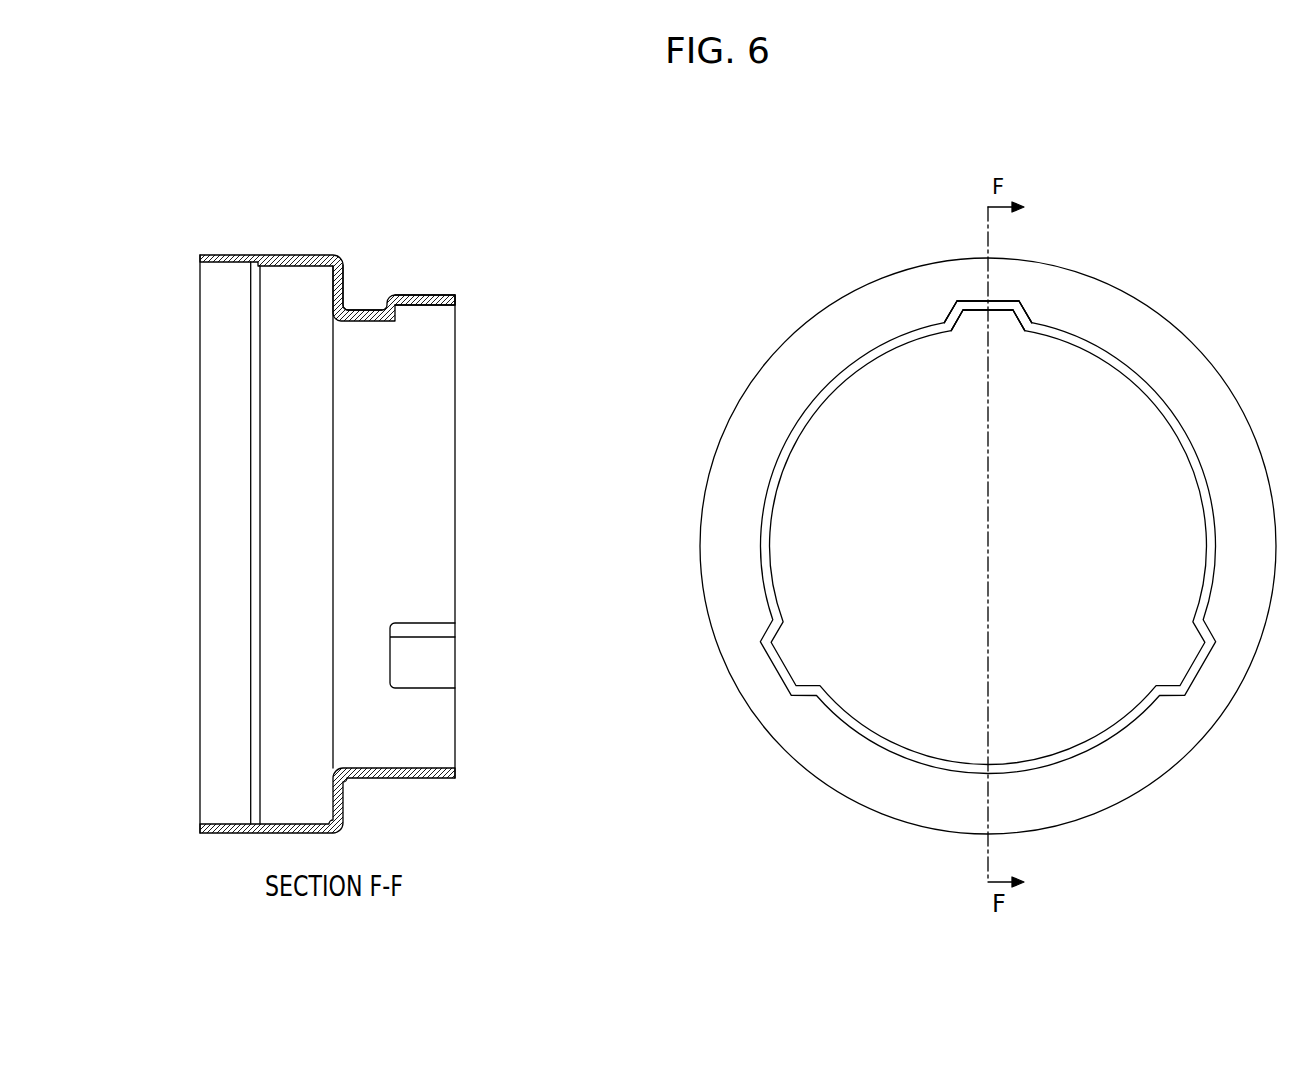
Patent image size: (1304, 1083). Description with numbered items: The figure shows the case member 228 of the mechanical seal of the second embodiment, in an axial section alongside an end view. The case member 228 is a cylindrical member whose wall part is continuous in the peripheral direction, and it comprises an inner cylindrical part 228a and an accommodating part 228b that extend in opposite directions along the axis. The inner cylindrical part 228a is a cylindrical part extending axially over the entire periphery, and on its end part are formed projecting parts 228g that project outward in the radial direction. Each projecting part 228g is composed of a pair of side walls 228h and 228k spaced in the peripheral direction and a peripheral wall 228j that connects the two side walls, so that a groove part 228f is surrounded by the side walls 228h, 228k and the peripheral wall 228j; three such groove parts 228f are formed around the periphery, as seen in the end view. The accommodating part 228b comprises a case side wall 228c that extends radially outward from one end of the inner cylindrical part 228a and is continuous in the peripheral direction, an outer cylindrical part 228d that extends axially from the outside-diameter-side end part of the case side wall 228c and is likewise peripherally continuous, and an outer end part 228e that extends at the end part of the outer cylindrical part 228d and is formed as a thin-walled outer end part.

The case member 228 is at (1143, 228).
The inner cylindrical part 228a is at (365, 308).
The accommodating part 228b is at (388, 162).
The case side wall 228c is at (356, 272).
The outer cylindrical part 228d is at (288, 257).
The outer end part 228e is at (215, 255).
The groove part 228f is at (423, 312).
The projecting part 228g is at (1083, 152).
The side wall 228h is at (950, 310).
The peripheral wall 228j is at (983, 301).
The side wall 228k is at (1030, 305).